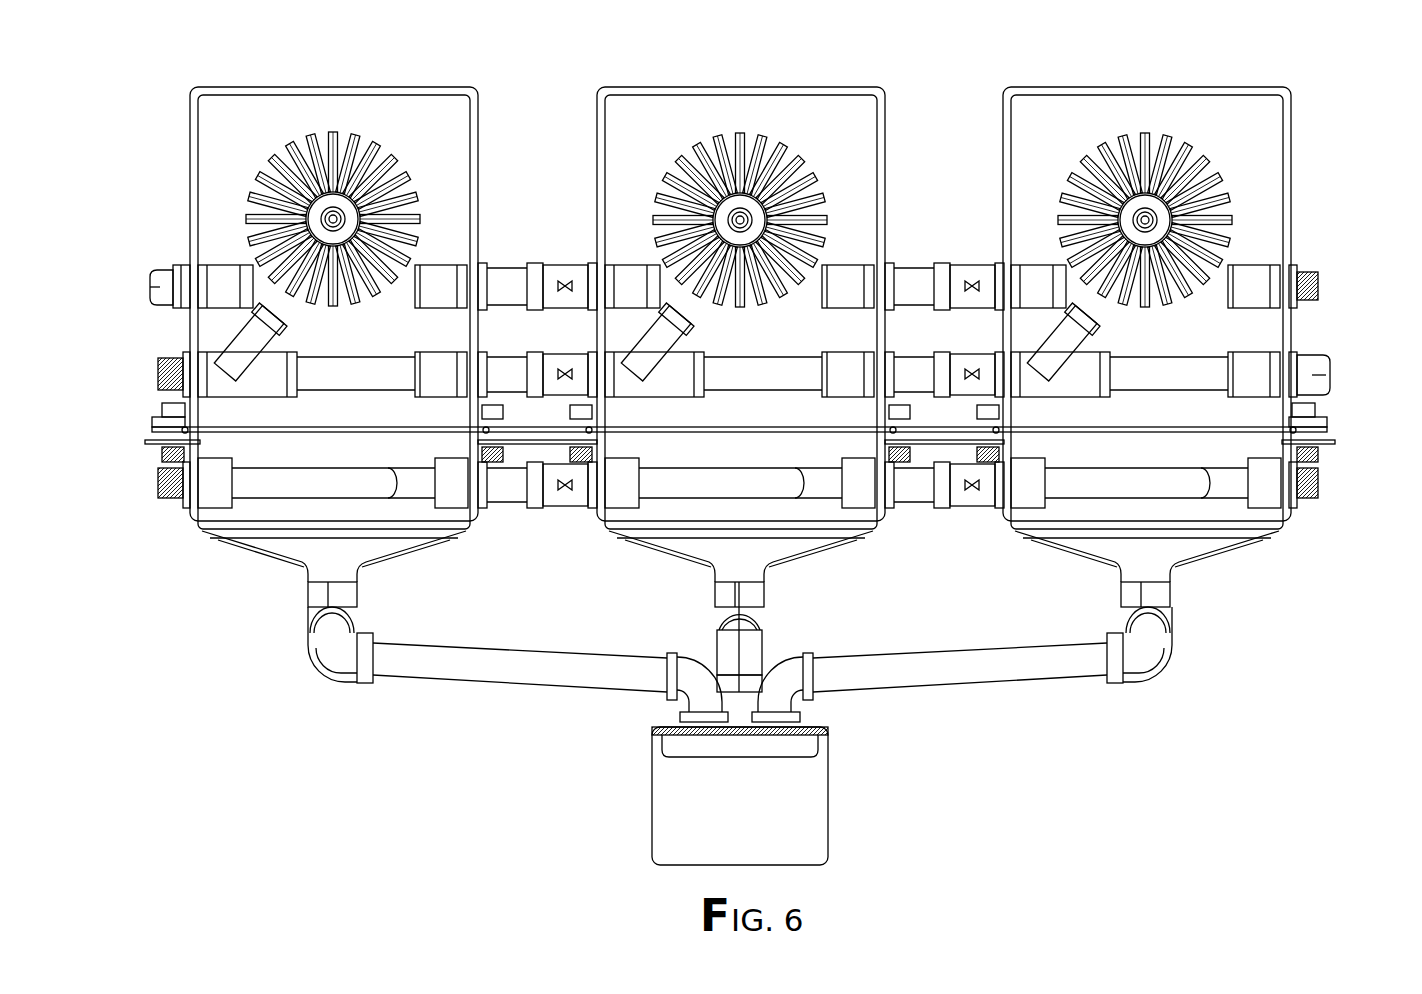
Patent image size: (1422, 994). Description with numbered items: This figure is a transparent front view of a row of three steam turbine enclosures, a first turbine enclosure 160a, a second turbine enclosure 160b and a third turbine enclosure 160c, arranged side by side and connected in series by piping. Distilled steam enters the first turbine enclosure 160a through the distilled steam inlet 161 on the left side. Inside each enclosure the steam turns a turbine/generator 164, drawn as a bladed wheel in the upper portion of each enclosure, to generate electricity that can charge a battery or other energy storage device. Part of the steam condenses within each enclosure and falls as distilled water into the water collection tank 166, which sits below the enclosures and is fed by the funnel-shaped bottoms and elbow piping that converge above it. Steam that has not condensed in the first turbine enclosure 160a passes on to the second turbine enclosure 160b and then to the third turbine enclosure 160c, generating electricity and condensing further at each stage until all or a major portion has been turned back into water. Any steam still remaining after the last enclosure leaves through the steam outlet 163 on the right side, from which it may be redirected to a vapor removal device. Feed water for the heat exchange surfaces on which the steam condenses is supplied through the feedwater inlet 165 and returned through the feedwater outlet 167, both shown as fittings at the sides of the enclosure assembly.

The first turbine enclosure 160a is at (243, 88).
The second turbine enclosure 160b is at (682, 88).
The third turbine enclosure 160c is at (1068, 88).
The distilled steam inlet 161 is at (157, 368).
The steam outlet 163 is at (1318, 283).
The turbine/generator 164 is at (357, 152).
The feedwater inlet 165 is at (1320, 487).
The water collection tank 166 is at (817, 822).
The feedwater outlet 167 is at (157, 484).